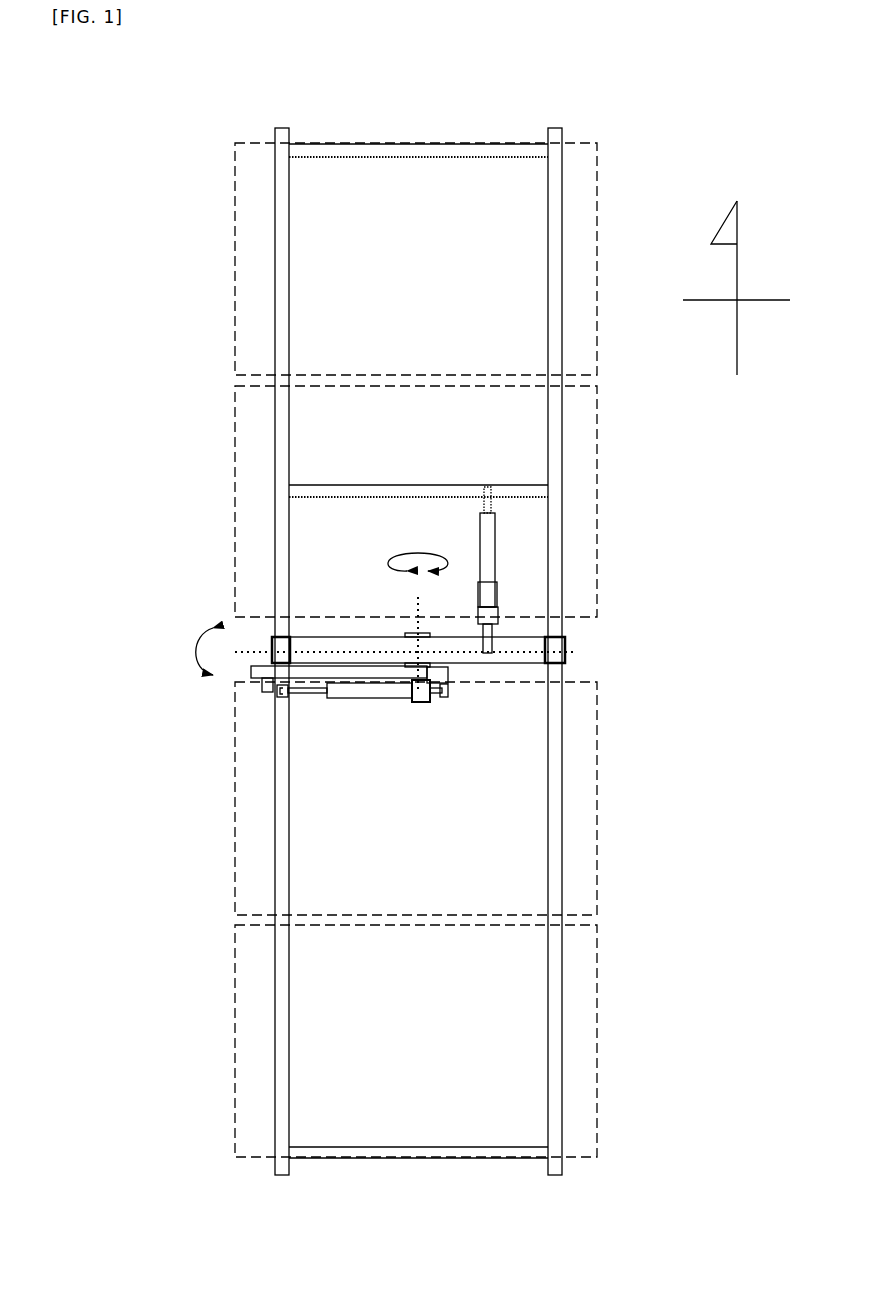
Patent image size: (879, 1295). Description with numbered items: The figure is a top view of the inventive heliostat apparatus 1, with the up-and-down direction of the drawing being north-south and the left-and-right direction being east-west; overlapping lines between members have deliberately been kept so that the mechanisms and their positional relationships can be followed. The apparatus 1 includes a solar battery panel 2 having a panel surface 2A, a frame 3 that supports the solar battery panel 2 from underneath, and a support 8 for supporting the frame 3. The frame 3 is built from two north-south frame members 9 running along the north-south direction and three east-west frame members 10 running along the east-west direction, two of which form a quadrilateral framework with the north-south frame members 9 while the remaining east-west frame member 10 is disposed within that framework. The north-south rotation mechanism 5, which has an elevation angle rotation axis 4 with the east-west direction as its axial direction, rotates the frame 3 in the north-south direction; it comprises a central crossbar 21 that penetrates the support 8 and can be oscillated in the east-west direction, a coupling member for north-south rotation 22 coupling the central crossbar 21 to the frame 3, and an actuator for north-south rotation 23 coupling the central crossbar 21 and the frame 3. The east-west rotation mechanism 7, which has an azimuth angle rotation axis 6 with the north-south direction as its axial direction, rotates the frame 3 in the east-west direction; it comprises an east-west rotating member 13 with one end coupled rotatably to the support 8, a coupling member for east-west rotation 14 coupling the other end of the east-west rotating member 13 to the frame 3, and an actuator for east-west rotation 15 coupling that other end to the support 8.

The heliostat apparatus 1 is at (75, 78).
The solar battery panel 2 is at (236, 217).
The panel surface 2A is at (253, 264).
The frame 3 is at (270, 131).
The elevation angle rotation axis 4 is at (253, 648).
The north-south rotation mechanism 5 is at (522, 556).
The azimuth angle rotation axis 6 is at (417, 603).
The east-west rotation mechanism 7 is at (340, 724).
The support 8 is at (402, 631).
The north-south frame members 9 is at (546, 133).
The east-west frame members 10 is at (395, 485).
The east-west rotating member 13 is at (252, 671).
The coupling member for east-west rotation 14 is at (265, 688).
The actuator for east-west rotation 15 is at (375, 690).
The central crossbar 21 is at (512, 663).
The coupling member for north-south rotation 22 is at (567, 664).
The actuator for north-south rotation 23 is at (490, 568).